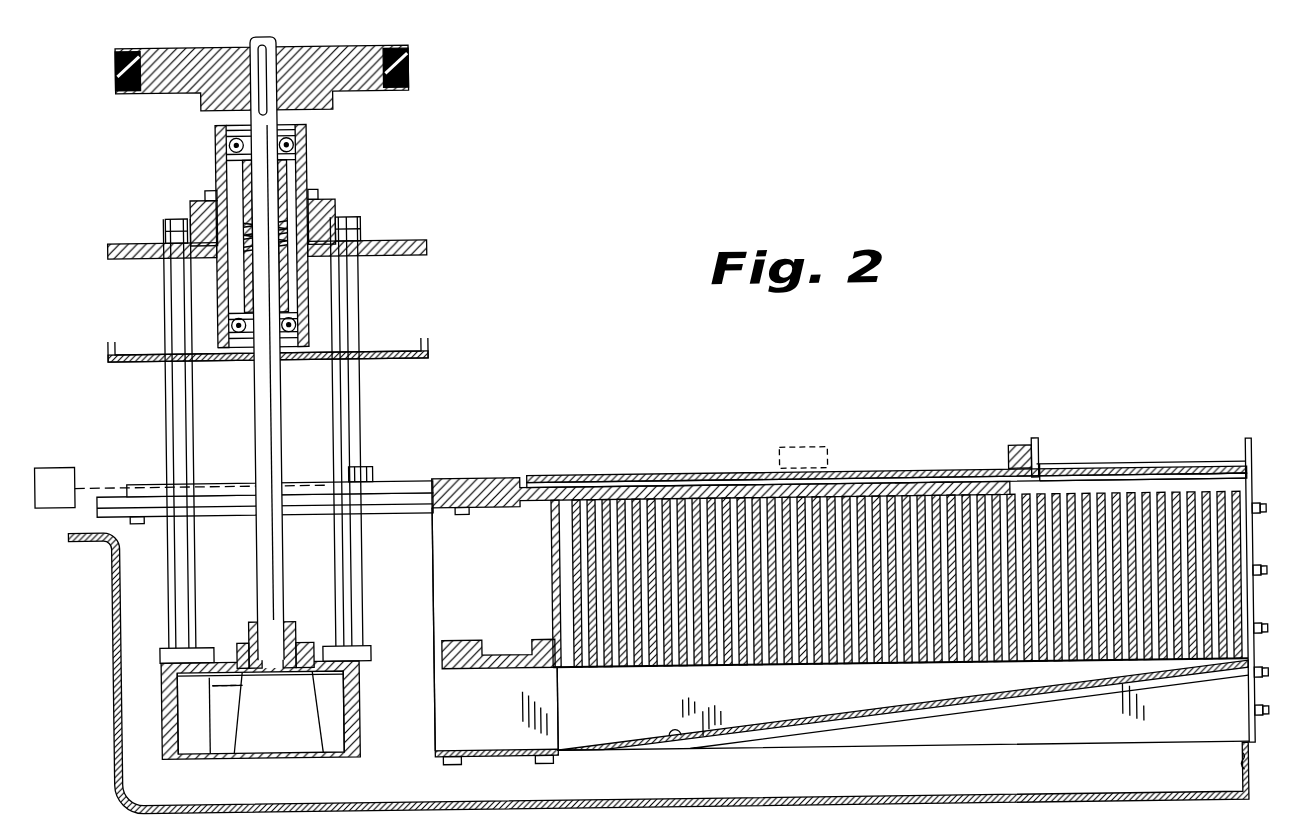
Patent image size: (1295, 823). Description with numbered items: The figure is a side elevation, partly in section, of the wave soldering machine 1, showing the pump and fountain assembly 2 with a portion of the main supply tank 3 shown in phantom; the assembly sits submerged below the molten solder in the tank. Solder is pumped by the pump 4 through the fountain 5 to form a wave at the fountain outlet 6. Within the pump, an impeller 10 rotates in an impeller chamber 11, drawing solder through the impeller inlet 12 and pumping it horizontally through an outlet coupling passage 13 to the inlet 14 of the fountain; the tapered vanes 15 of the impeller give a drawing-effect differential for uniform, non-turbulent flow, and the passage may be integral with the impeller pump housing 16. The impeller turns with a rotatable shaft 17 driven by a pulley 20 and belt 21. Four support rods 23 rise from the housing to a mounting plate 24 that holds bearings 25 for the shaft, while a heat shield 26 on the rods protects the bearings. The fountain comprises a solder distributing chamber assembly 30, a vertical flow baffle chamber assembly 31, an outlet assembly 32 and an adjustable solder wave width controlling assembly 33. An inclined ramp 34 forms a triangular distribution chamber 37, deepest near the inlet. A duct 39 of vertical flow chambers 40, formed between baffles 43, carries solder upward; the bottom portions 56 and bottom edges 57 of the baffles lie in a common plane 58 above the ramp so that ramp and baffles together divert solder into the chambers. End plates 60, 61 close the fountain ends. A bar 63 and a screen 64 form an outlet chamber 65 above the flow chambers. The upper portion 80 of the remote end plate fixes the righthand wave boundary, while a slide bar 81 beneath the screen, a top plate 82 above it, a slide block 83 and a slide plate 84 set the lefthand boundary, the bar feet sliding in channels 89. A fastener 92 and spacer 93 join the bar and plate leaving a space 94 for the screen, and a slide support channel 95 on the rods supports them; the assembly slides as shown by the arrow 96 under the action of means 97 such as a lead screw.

The wave soldering machine 1 is at (109, 578).
The pump and fountain assembly 2 is at (129, 454).
The main supply tank 3 is at (91, 533).
The pump 4 is at (150, 661).
The fountain 5 is at (481, 441).
The fountain outlet 6 is at (1187, 444).
The impeller 10 is at (203, 740).
The impeller chamber 11 is at (186, 724).
The impeller inlet 12 is at (240, 745).
The outlet coupling passage 13 is at (482, 743).
The fountain inlet 14 is at (551, 714).
The vanes 15 is at (324, 734).
The impeller pump housing 16 is at (355, 735).
The rotatable shaft 17 is at (284, 562).
The pulley 20 is at (143, 87).
The belt 21 is at (121, 60).
The support rods 23 is at (168, 284).
The mounting plate 24 is at (125, 237).
The bearings 25 is at (233, 140).
The heat shield 26 is at (113, 343).
The solder distributing chamber assembly 30 is at (657, 752).
The vertical flow baffle chamber assembly 31 is at (641, 498).
The outlet assembly 32 is at (1116, 466).
The adjustable solder wave width controlling assembly 33 is at (1043, 456).
The inclined ramp 34 is at (673, 734).
The distribution chamber 37 is at (714, 716).
The duct 39 is at (828, 622).
The vertical flow chambers 40 is at (852, 656).
The baffles 43 is at (889, 658).
The bottom portions 56 is at (590, 667).
The bottom edges 57 is at (606, 667).
The common plane 58 is at (620, 667).
The end plate 60 is at (553, 563).
The end plate 61 is at (1260, 528).
The bar 63 is at (1136, 470).
The screen 64 is at (1179, 483).
The outlet chamber 65 is at (1226, 479).
The upper portion of the fountain end plate 80 is at (1248, 446).
The slide bar 81 is at (906, 489).
The top plate 82 is at (940, 487).
The slide block 83 is at (990, 475).
The slide plate 84 is at (1016, 451).
The channels 89 is at (1237, 485).
The fastener 92 is at (362, 464).
The spacer 93 is at (385, 486).
The space 94 is at (437, 500).
The slide support channel 95 is at (470, 493).
The arrow 96 is at (1050, 416).
The means 97 is at (66, 460).